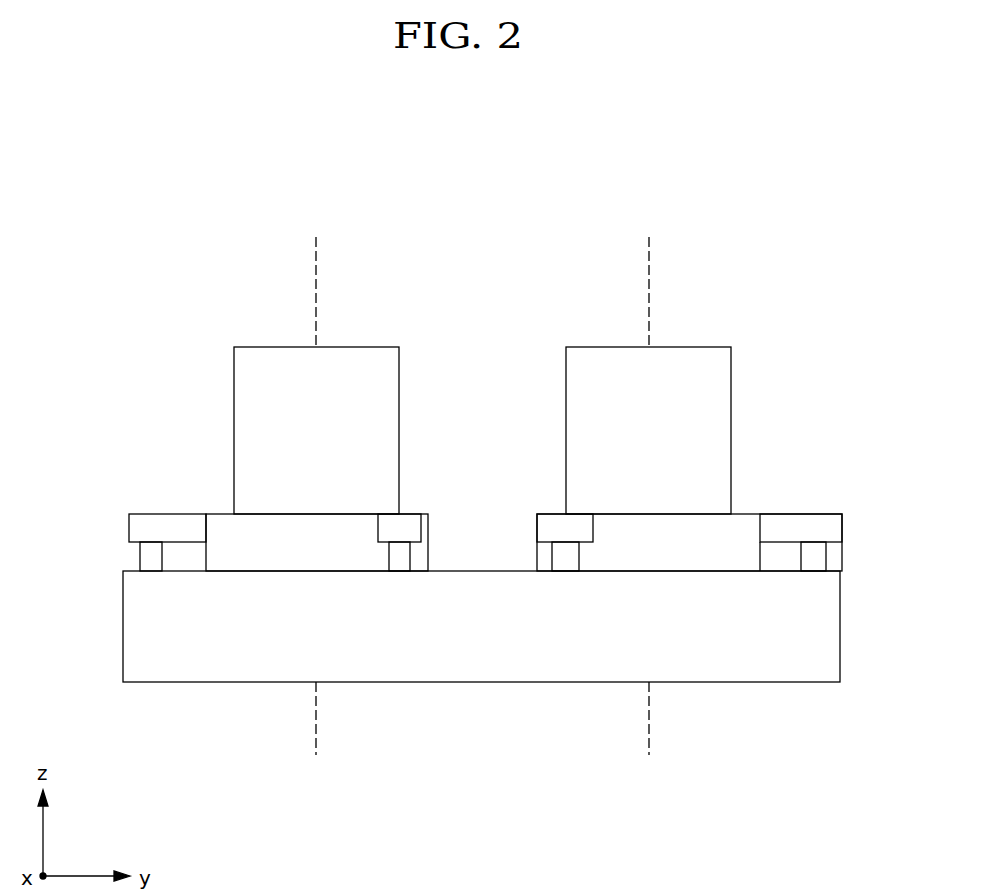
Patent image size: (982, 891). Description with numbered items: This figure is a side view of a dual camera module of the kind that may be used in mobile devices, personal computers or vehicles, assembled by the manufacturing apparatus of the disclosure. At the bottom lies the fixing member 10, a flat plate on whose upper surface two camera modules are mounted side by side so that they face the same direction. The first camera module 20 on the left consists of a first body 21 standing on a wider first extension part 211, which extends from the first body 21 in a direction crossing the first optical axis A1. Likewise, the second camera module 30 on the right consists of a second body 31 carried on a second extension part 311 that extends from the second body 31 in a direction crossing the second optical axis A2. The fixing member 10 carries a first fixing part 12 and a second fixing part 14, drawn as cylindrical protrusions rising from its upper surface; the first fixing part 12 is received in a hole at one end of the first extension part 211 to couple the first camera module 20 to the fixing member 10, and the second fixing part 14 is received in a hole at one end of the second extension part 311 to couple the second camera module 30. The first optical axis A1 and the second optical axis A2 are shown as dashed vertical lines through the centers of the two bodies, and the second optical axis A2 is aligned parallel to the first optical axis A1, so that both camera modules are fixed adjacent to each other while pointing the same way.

The fixing member 10 is at (474, 672).
The first camera module 20 is at (206, 362).
The second camera module 30 is at (759, 362).
The first body 21 is at (288, 558).
The second body 31 is at (674, 558).
The first extension part 211 is at (177, 520).
The second extension part 311 is at (788, 520).
The first fixing part 12 is at (140, 556).
The second fixing part 14 is at (822, 557).
The first optical axis A1 is at (316, 255).
The second optical axis A2 is at (649, 255).